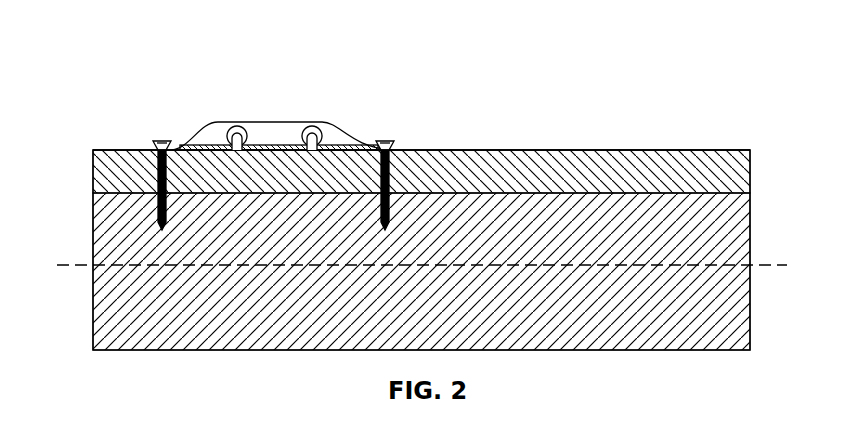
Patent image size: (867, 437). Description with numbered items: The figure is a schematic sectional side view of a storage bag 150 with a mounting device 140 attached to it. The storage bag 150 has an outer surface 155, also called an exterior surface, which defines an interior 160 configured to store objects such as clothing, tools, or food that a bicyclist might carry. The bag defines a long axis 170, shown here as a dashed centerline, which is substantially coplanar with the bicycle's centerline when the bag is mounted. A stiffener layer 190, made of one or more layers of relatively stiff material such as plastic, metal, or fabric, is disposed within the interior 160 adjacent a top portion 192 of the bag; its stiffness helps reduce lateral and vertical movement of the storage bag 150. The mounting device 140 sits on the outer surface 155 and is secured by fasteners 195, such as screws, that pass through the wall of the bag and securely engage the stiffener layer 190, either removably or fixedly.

The storage bag 150 is at (114, 49).
The mounting device 140 is at (305, 120).
The outer surface 155 is at (686, 146).
The interior 160 is at (740, 318).
The long axis 170 is at (72, 266).
The stiffener layer 190 is at (538, 160).
The top portion 192 is at (140, 146).
The fasteners 195 is at (165, 141).